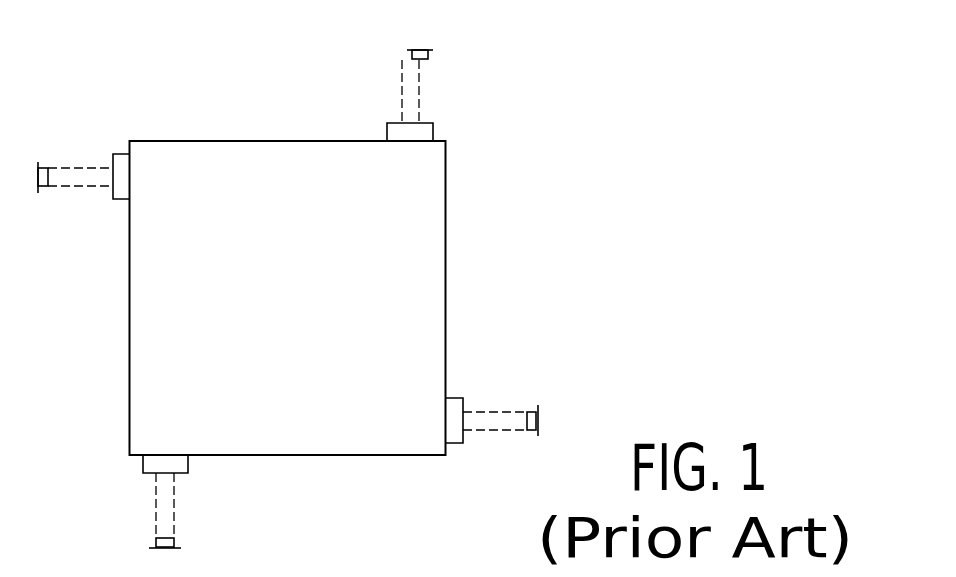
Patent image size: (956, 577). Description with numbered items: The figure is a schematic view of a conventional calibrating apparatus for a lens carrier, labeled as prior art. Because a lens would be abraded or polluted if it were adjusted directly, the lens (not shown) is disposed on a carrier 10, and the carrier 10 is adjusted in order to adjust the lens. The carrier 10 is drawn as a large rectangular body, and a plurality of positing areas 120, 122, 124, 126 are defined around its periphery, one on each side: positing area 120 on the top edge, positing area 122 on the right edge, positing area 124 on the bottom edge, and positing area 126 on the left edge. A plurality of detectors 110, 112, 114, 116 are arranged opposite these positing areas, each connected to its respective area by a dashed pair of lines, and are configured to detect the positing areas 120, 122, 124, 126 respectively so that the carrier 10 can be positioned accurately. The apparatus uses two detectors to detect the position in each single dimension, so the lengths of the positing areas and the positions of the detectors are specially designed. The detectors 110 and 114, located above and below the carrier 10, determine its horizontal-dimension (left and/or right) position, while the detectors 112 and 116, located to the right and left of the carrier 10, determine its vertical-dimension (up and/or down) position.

The carrier 10 is at (432, 262).
The detector 110 is at (428, 55).
The detector 112 is at (533, 430).
The detector 114 is at (172, 545).
The detector 116 is at (42, 193).
The positing area 120 is at (425, 135).
The positing area 122 is at (456, 402).
The positing area 124 is at (187, 465).
The positing area 126 is at (121, 199).